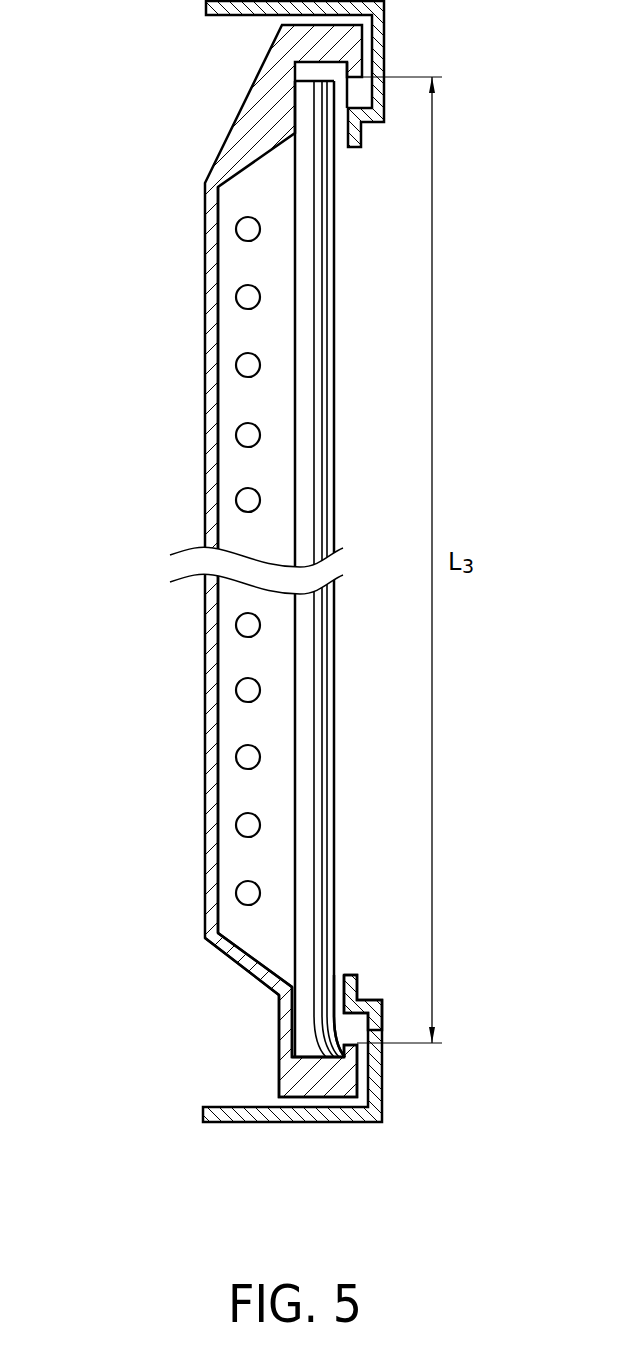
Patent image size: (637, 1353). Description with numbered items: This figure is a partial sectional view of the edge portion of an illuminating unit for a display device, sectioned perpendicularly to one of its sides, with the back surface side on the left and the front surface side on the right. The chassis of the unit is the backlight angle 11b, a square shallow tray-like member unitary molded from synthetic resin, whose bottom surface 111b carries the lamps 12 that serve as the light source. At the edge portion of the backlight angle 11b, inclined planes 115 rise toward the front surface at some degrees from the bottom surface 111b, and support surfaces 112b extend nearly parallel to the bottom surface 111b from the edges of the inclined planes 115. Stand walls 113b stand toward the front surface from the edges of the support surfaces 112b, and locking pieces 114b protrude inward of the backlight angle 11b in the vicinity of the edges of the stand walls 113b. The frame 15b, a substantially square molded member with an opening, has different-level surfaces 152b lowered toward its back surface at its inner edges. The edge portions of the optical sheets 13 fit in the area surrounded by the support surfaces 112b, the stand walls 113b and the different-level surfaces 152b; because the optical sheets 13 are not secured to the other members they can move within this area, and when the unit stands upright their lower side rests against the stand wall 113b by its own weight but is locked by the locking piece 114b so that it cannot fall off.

The backlight angle 11b is at (205, 330).
The bottom surface 111b is at (220, 468).
The lamps 12 is at (235, 223).
The optical sheets 13 is at (340, 201).
The support surfaces 112b is at (290, 1010).
The stand walls 113b is at (310, 1060).
The locking pieces 114b is at (350, 1043).
The inclined planes 115 is at (240, 960).
The different-level surfaces 152b is at (335, 978).
The frame 15b is at (240, 1123).